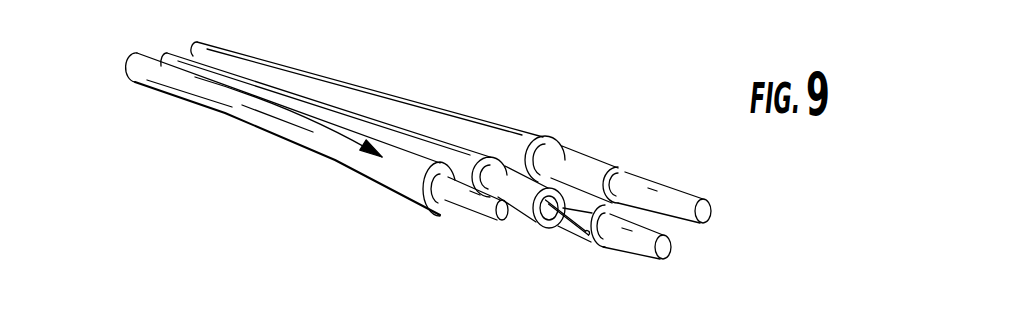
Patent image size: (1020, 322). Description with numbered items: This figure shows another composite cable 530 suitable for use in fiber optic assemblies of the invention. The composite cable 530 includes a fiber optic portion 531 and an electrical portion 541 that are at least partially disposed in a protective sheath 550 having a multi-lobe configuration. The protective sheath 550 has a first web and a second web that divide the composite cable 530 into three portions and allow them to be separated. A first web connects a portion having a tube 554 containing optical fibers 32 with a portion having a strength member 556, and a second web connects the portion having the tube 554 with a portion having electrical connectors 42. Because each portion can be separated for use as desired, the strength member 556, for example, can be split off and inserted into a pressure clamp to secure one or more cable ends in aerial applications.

The composite cable 530 is at (648, 80).
The fiber optic portion 531 is at (145, 81).
The electrical portion 541 is at (422, 117).
The protective sheath 550 is at (523, 137).
The strength member 556 is at (518, 193).
The tube 554 is at (590, 217).
The optical fibers 32 is at (573, 218).
The electrical connectors 42 is at (664, 241).